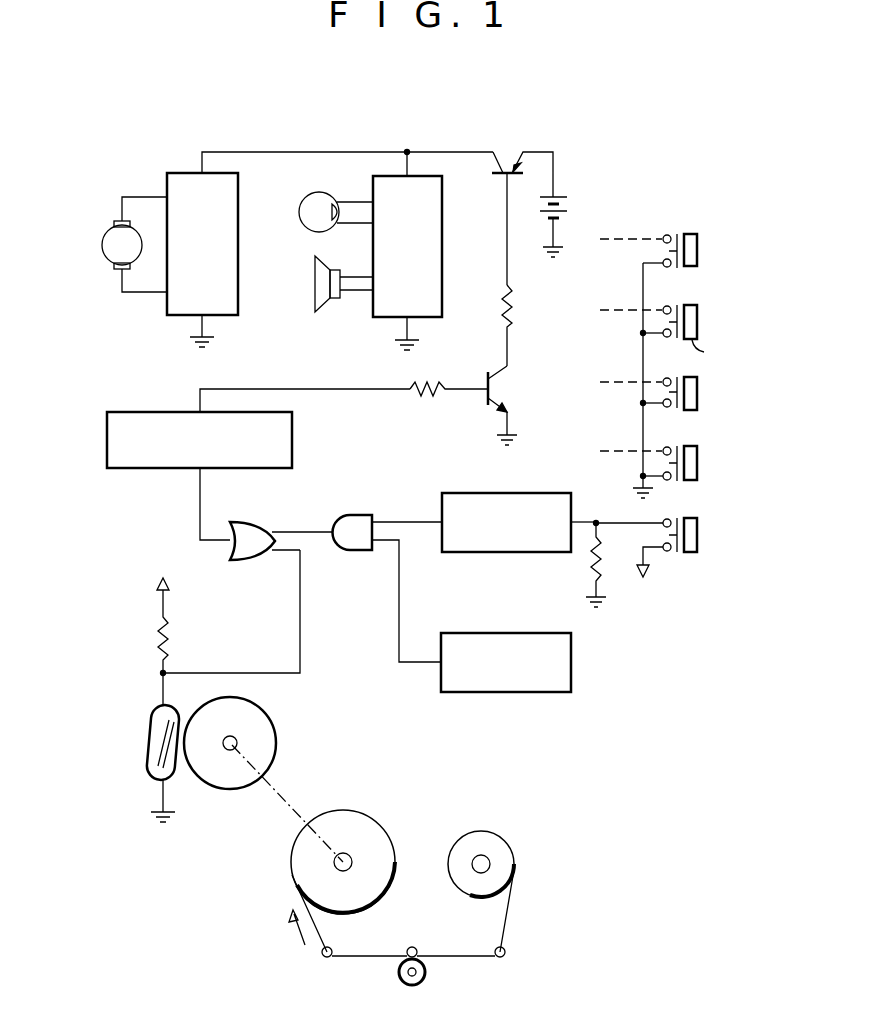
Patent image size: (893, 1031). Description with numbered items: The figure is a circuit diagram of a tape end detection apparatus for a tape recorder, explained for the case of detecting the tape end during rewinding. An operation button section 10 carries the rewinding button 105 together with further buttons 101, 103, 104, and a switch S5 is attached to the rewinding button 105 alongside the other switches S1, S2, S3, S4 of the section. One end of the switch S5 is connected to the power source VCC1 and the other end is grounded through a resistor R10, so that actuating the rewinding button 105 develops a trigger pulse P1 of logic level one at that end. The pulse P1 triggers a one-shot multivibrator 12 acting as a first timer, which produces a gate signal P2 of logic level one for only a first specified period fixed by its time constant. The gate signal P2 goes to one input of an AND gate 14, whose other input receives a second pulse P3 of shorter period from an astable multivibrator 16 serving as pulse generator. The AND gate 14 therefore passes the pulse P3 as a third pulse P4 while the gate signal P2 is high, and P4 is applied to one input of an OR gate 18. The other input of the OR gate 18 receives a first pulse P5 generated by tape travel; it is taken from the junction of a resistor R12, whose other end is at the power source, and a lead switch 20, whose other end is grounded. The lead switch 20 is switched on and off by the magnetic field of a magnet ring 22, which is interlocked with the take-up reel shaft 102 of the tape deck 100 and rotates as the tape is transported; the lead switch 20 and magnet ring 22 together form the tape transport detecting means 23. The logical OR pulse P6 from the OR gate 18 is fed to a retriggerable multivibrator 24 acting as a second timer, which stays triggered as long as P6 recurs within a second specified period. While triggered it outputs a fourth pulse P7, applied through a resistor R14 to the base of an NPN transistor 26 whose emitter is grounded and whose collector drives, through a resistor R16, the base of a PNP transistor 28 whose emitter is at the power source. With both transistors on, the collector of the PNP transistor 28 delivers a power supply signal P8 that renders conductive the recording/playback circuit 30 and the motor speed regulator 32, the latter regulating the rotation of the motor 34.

The operation button section 10 is at (667, 226).
The record push button 101 is at (692, 267).
The play push button 103 is at (692, 411).
The fast forward push button 104 is at (693, 481).
The rewinding button 105 is at (693, 553).
The one-shot multivibrator 12 is at (550, 500).
The AND gate 14 is at (351, 512).
The astable multivibrator 16 is at (506, 640).
The OR gate 18 is at (250, 557).
The lead switch 20 is at (149, 723).
The magnet ring 22 is at (273, 736).
The tape transport detecting means 23 is at (206, 822).
The retriggerable multivibrator 24 is at (293, 443).
The NPN transistor 26 is at (498, 393).
The PNP transistor 28 is at (509, 162).
The recording/playback circuit 30 is at (443, 221).
The motor speed regulator 32 is at (240, 178).
The motor 34 is at (118, 258).
The tape deck 100 is at (490, 820).
The take-up reel shaft 102 is at (350, 857).
The resistor R10 is at (590, 575).
The resistor R12 is at (158, 622).
The resistor R14 is at (430, 394).
The resistor R16 is at (515, 313).
The trigger pulse P1 is at (595, 519).
The gate signal P2 is at (406, 518).
The second pulse P3 is at (401, 588).
The third pulse P4 is at (302, 528).
The first pulse P5 is at (301, 612).
The logical OR pulse P6 is at (204, 496).
The fourth pulse P7 is at (293, 387).
The power supply signal P8 is at (407, 150).
The record switch S1 is at (652, 255).
The stop switch S2 is at (651, 326).
The play switch S3 is at (651, 397).
The fast forward switch S4 is at (651, 469).
The switch S5 is at (657, 536).
The supply voltage battery VCC1 is at (576, 210).